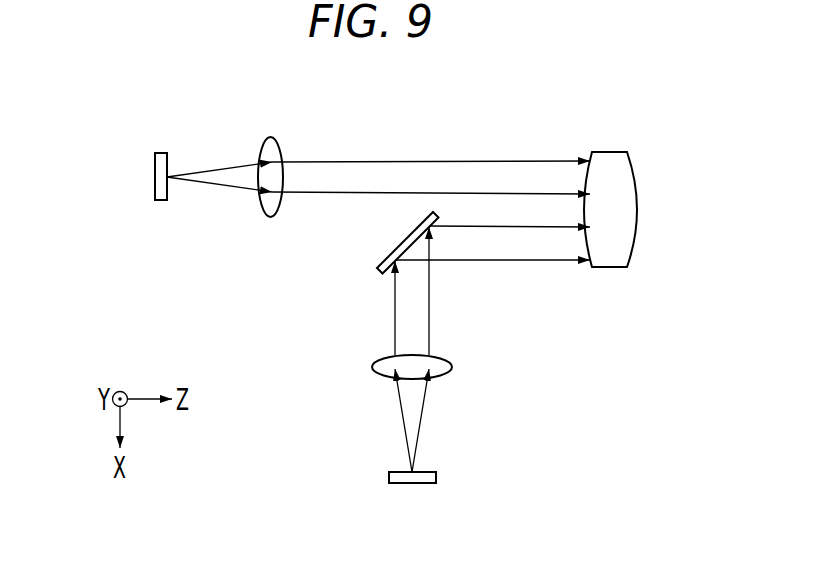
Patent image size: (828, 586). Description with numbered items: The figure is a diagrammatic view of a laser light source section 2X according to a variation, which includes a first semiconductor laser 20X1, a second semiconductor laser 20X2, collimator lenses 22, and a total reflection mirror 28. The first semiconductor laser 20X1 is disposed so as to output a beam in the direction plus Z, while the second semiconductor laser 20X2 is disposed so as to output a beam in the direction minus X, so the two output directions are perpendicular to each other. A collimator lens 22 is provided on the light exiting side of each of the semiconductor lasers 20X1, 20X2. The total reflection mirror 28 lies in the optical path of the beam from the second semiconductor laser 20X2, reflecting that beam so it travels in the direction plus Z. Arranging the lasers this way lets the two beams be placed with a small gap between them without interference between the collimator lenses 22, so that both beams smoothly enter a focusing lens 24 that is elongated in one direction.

The first semiconductor laser 20X1 is at (160, 153).
The collimator lenses 22 is at (263, 135).
The focusing lens 24 is at (608, 152).
The total reflection mirror 28 is at (402, 242).
The second semiconductor laser 20X2 is at (430, 471).
The laser light source section 2X is at (310, 320).